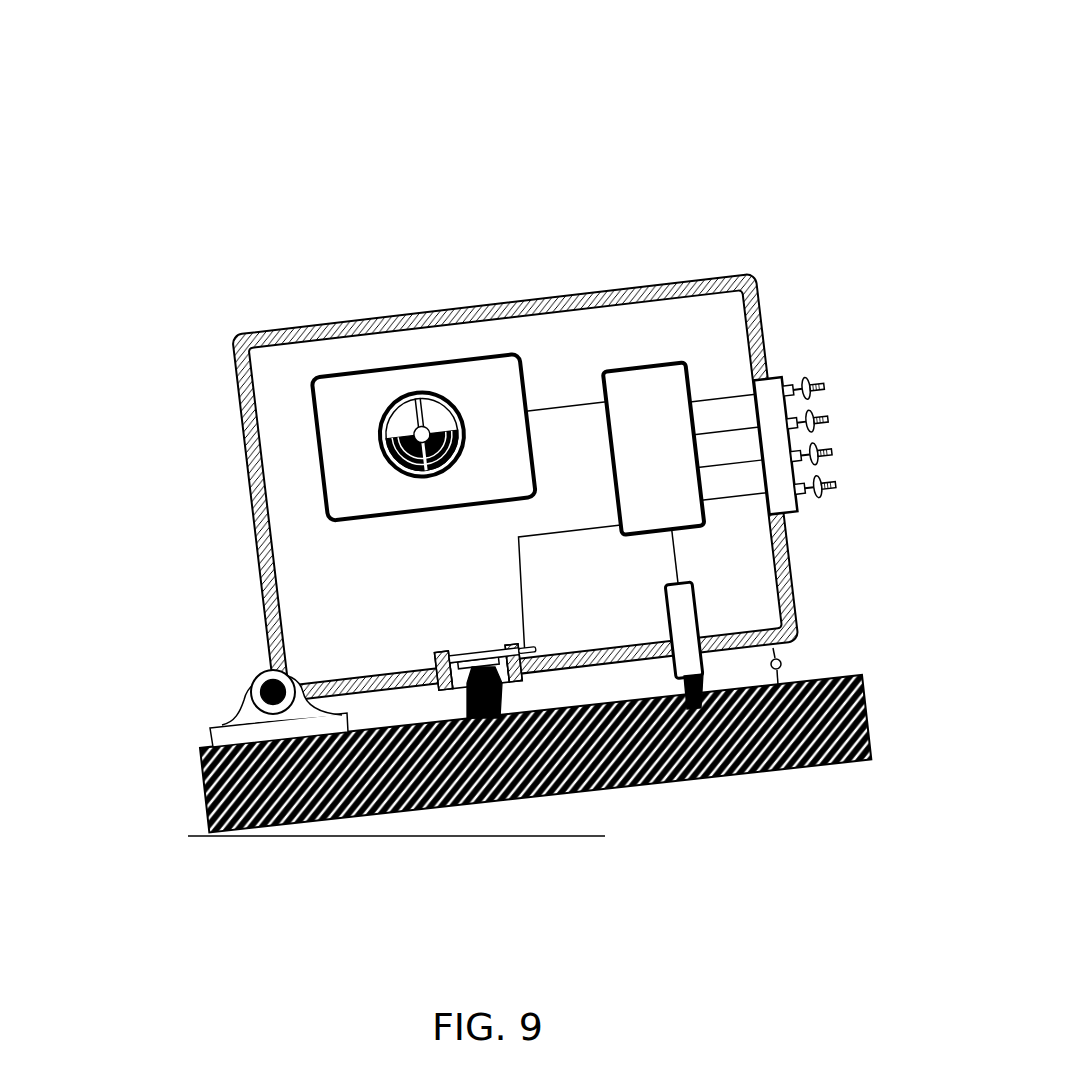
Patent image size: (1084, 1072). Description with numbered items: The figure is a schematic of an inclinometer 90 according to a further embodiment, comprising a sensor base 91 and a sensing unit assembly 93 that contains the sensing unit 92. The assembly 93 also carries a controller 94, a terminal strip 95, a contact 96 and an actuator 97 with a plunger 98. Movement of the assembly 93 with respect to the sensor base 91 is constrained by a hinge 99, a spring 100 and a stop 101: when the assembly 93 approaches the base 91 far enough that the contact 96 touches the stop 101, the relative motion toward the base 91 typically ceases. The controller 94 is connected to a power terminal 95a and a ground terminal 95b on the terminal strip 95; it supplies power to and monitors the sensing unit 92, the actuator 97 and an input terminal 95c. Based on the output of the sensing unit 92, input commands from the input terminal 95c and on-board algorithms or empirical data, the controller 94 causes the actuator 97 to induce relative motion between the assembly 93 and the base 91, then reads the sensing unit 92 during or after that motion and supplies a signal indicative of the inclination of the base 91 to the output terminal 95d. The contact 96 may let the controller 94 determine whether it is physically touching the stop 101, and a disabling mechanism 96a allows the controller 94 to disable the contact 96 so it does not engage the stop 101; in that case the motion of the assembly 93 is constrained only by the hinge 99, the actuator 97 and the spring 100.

The inclinometer 90 is at (735, 68).
The sensor base 91 is at (822, 745).
The sensing unit 92 is at (373, 385).
The sensing unit assembly 93 is at (232, 334).
The controller 94 is at (649, 392).
The terminal strip 95 is at (770, 382).
The power terminal 95a is at (834, 386).
The ground terminal 95b is at (821, 418).
The input terminal 95c is at (828, 451).
The output terminal 95d is at (827, 492).
The contact 96 is at (435, 659).
The disabling mechanism 96a is at (523, 648).
The actuator 97 is at (683, 641).
The plunger 98 is at (697, 707).
The hinge 99 is at (243, 712).
The spring 100 is at (790, 668).
The stop 101 is at (503, 702).